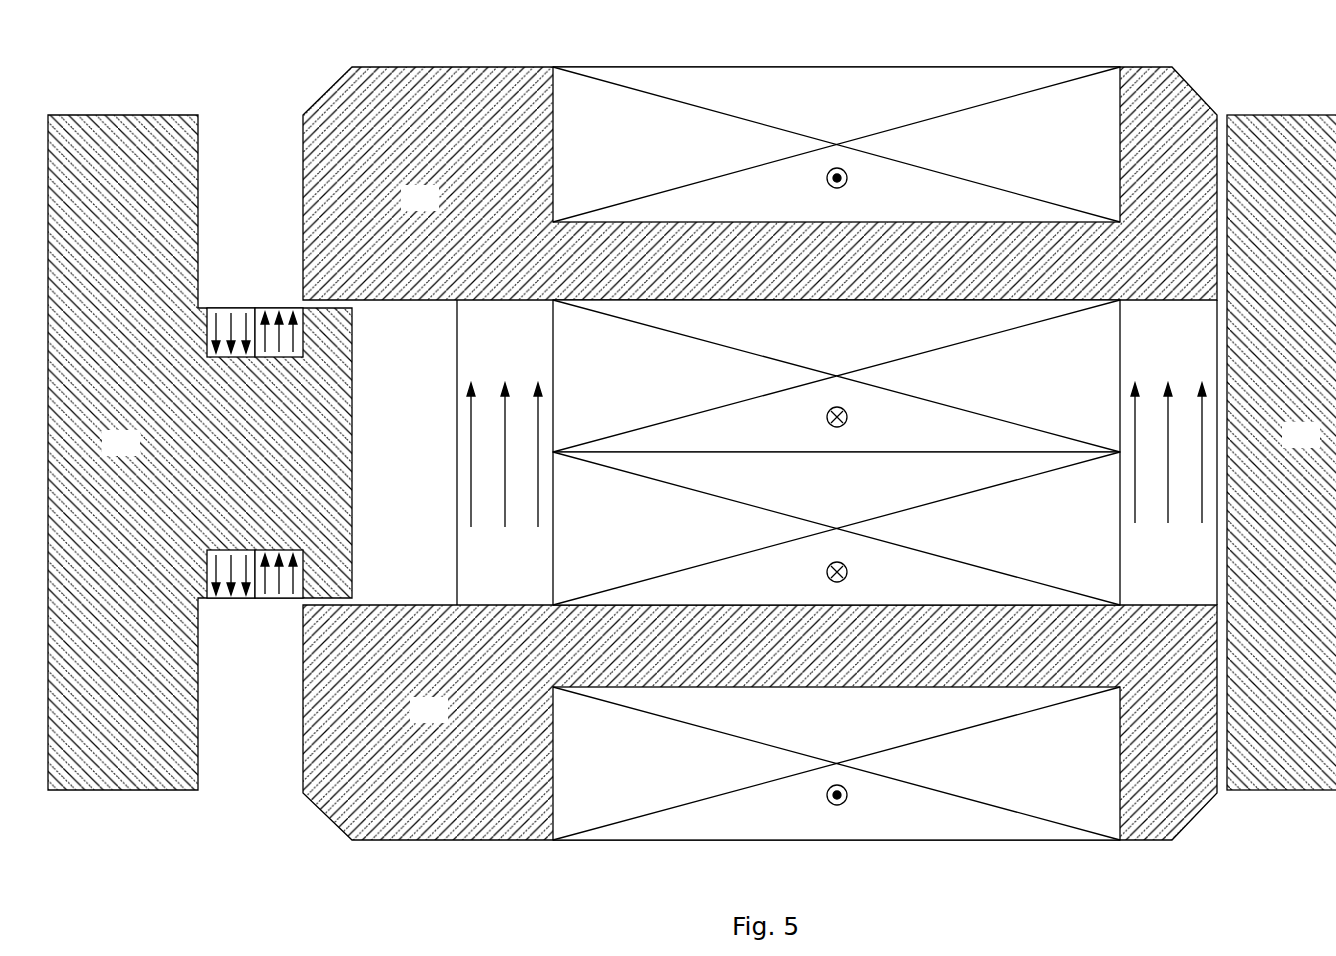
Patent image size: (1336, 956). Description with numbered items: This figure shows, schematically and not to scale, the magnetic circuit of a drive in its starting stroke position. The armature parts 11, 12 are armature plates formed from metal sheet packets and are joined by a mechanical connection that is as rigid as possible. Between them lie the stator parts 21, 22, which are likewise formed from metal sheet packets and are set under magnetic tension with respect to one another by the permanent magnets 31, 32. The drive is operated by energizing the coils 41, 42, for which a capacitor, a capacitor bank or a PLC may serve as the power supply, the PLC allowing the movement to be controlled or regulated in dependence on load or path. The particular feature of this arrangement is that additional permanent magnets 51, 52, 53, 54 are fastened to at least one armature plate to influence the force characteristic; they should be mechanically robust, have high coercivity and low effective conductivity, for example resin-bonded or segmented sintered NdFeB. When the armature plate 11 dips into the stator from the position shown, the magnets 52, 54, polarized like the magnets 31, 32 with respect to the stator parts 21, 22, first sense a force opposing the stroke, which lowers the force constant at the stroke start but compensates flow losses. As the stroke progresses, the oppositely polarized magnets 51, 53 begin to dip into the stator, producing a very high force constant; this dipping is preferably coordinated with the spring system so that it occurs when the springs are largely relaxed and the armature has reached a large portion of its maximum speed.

The armature part 11 is at (200, 452).
The armature part 12 is at (1281, 452).
The stator part 21 is at (760, 722).
The stator part 22 is at (760, 183).
The permanent magnet 31 is at (499, 452).
The permanent magnet 32 is at (1174, 452).
The coil 41 is at (836, 646).
The coil 42 is at (836, 259).
The additional permanent magnet 51 is at (230, 578).
The additional permanent magnet 52 is at (270, 575).
The additional permanent magnet 53 is at (222, 337).
The additional permanent magnet 54 is at (275, 332).